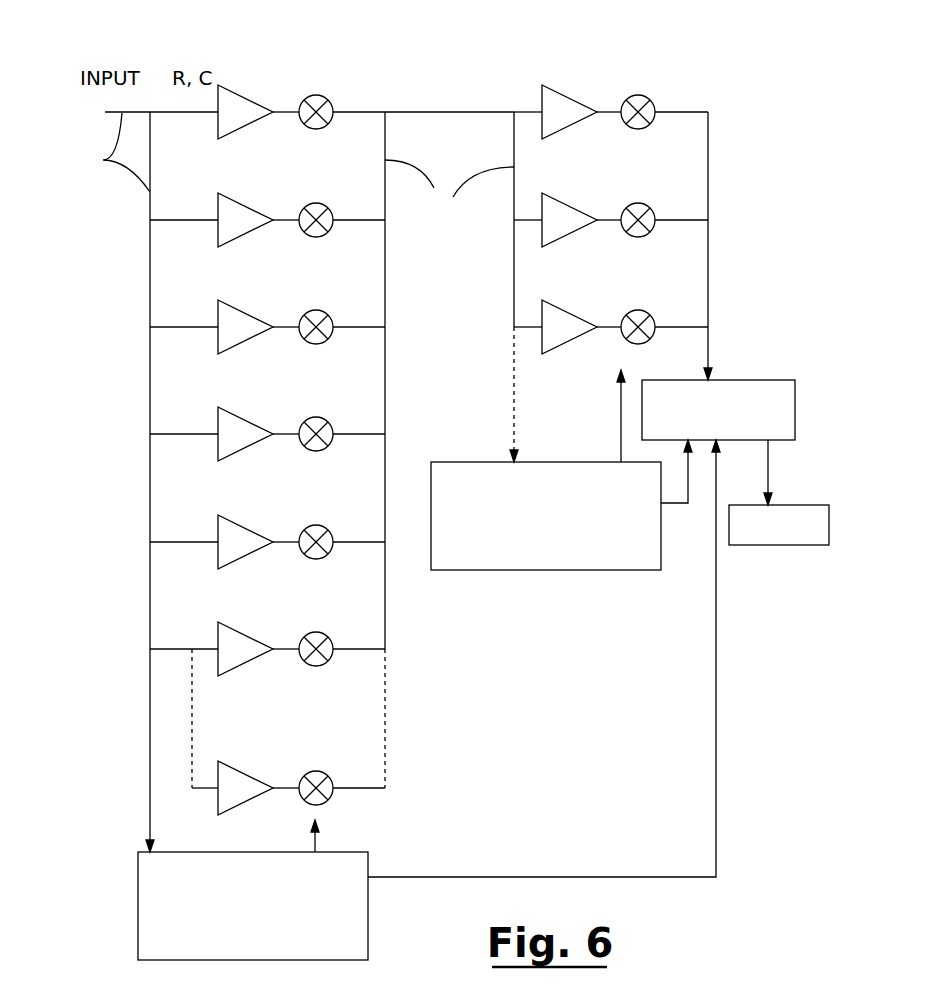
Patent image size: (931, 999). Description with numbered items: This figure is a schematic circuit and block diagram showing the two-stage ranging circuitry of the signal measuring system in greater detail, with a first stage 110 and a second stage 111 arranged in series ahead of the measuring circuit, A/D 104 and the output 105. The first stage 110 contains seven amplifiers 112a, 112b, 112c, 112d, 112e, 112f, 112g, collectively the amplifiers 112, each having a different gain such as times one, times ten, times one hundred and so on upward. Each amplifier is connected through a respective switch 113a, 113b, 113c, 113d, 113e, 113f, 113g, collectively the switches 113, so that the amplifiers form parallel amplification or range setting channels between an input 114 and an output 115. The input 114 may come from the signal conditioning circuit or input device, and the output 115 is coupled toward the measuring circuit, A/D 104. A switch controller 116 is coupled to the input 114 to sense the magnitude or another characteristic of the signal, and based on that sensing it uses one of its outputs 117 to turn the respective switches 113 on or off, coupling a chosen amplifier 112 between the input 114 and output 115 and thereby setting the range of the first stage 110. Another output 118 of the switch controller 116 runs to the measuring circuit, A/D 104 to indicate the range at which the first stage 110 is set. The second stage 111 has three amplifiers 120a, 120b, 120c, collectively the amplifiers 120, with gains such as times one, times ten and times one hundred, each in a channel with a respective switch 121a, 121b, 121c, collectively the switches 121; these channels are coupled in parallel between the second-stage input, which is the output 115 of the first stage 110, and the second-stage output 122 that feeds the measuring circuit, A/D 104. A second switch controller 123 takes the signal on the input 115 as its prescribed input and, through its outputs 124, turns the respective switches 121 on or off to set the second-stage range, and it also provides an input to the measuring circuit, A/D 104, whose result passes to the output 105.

The measuring circuit, A/D 104 is at (723, 380).
The output 105 is at (808, 545).
The first stage 110 is at (402, 90).
The second stage 111 is at (570, 54).
The amplifiers 112 is at (211, 432).
The amplifier 112a is at (245, 130).
The amplifier 112b is at (243, 235).
The amplifier 112c is at (245, 340).
The amplifier 112d is at (245, 450).
The amplifier 112e is at (240, 560).
The amplifier 112f is at (265, 668).
The amplifier 112g is at (258, 800).
The switches 113 is at (316, 439).
The switch 113a is at (323, 128).
The switch 113b is at (328, 238).
The switch 113c is at (328, 345).
The switch 113d is at (333, 450).
The switch 113e is at (333, 560).
The switch 113f is at (320, 665).
The switch 113g is at (303, 798).
The input 114 is at (103, 160).
The output 115 is at (449, 450).
The switch controller 116 is at (368, 938).
The output 117 is at (318, 846).
The output 118 is at (530, 875).
The amplifiers 120 is at (549, 191).
The amplifier 120a is at (578, 122).
The amplifier 120b is at (580, 225).
The amplifier 120c is at (568, 310).
The switches 121 is at (691, 199).
The switch 121a is at (648, 128).
The switch 121b is at (648, 205).
The switch 121c is at (648, 310).
The output 122 is at (708, 278).
The switch controller 123 is at (607, 462).
The outputs 124 is at (621, 399).